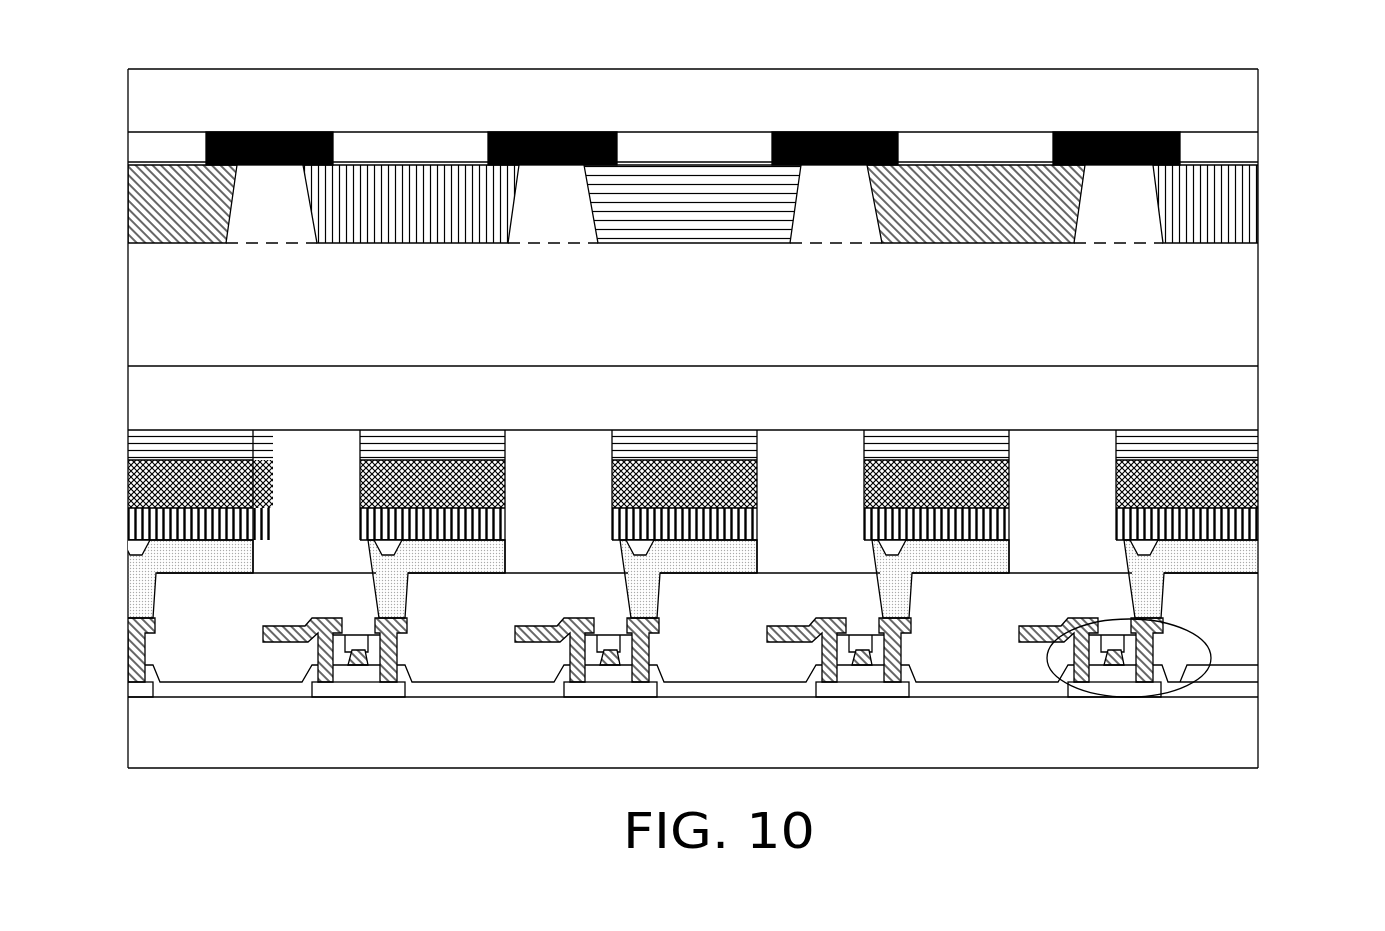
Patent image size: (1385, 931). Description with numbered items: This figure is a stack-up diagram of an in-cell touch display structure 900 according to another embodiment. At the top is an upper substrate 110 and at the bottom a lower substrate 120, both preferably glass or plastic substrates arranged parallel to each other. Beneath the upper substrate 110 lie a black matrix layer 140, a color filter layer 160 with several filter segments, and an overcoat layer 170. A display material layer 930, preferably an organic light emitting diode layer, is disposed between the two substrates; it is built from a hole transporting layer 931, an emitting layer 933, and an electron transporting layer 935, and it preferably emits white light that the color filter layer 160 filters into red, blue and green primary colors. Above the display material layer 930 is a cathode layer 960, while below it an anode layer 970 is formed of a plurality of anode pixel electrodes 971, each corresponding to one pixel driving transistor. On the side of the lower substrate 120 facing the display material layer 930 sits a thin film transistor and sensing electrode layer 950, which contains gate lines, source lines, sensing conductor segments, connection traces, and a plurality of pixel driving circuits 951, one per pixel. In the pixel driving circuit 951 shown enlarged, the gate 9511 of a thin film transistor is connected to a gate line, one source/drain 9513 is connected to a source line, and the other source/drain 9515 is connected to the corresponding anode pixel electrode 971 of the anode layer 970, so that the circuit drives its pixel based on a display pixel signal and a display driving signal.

The in-cell touch display structure 900 is at (113, 67).
The upper substrate 110 is at (1242, 94).
The black matrix layer 140 is at (1235, 142).
The color filter layer 160 is at (1212, 212).
The overcoat layer 170 is at (1227, 283).
The cathode layer 960 is at (1163, 407).
The display material layer 930 is at (709, 481).
The electron transporting layer 935 is at (1195, 450).
The emitting layer 933 is at (1208, 492).
The hole transporting layer 931 is at (1208, 533).
The anode layer 970 is at (730, 576).
The anode pixel electrode 971 is at (1128, 548).
The thin film transistor and sensing electrode layer 950 is at (691, 661).
The pixel driving circuit 951 is at (690, 663).
The gate 9511 is at (1107, 660).
The source/drain 9513 is at (1075, 652).
The source/drain 9515 is at (1143, 655).
The lower substrate 120 is at (1260, 730).